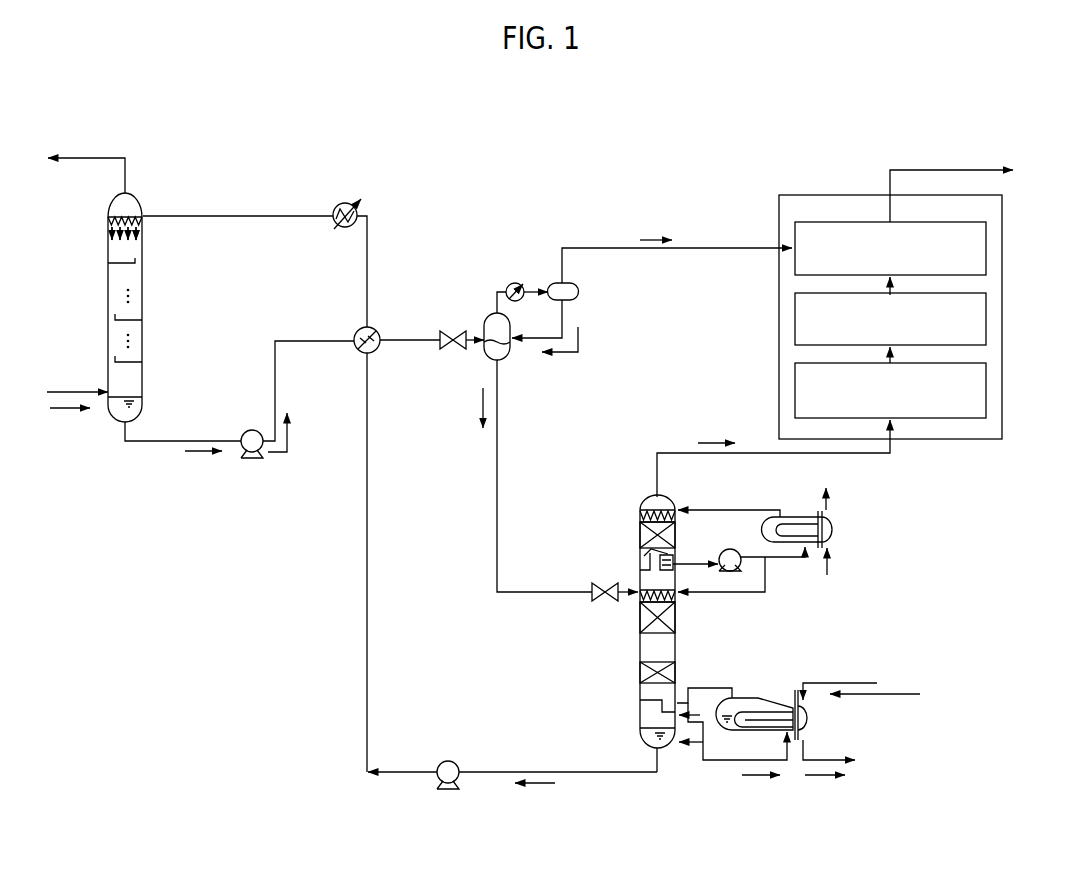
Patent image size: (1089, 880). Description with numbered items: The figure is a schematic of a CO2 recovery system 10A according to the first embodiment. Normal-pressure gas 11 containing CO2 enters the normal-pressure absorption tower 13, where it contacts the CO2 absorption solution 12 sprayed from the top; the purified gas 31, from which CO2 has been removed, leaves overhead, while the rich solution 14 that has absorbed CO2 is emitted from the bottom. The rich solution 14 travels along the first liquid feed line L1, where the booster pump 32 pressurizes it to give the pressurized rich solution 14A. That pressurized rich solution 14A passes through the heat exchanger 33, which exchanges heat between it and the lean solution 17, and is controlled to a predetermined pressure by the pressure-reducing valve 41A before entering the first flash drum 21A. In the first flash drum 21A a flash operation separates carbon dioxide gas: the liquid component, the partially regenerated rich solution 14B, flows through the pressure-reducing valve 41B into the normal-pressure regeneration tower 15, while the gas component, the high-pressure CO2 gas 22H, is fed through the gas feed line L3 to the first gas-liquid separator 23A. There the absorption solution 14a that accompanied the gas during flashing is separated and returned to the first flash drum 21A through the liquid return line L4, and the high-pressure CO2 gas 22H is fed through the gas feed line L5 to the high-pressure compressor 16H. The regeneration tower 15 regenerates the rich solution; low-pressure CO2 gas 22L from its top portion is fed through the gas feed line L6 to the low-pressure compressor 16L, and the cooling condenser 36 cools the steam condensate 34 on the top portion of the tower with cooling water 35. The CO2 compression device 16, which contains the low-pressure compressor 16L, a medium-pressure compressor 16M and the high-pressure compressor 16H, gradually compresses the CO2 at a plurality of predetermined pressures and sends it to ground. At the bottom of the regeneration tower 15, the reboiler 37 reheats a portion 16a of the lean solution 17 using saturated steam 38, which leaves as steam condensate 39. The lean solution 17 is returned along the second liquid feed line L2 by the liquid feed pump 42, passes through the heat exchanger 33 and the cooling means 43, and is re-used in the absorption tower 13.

The CO2 recovery system 10A is at (400, 153).
The gas (normal-pressure) 11 is at (68, 412).
The CO2 absorption solution 12 is at (143, 222).
The normal-pressure absorption tower 13 is at (92, 292).
The rich solution 14 is at (202, 456).
The pressurized rich solution 14A is at (282, 462).
The rich solution 14B is at (481, 408).
The absorption solution 14a is at (568, 358).
The normal-pressure regeneration tower 15 is at (684, 636).
The CO2 compression device 16 is at (921, 308).
The high-pressure compressor 16H is at (987, 248).
The medium-pressure compressor 16M is at (987, 318).
The low-pressure compressor 16L is at (987, 390).
The portion of the lean solution 16a is at (757, 778).
The lean solution 17 is at (540, 788).
The first flash drum 21A is at (484, 313).
The high-pressure CO2 gas 22H is at (650, 232).
The low-pressure CO2 gas 22L is at (706, 443).
The first gas-liquid separator 23A is at (579, 292).
The purified gas 31 is at (97, 157).
The booster pump 32 is at (246, 432).
The heat exchanger 33 is at (358, 330).
The steam condensate 34 is at (675, 566).
The cooling water 35 is at (830, 568).
The cooling condenser 36 is at (805, 516).
The reboiler 37 is at (762, 695).
The saturated steam 38 is at (855, 697).
The steam condensate 39 is at (817, 778).
The pressure-reducing valve 41A is at (447, 331).
The pressure-reducing valve 41B is at (604, 583).
The liquid feed pump 42 is at (440, 790).
The cooling means 43 is at (349, 203).
The first liquid feed line L1 is at (146, 443).
The second liquid feed line L2 is at (490, 770).
The gas feed line L3 is at (501, 286).
The liquid return line L4 is at (533, 341).
The gas feed line L5 is at (582, 247).
The gas feed line L6 is at (706, 455).